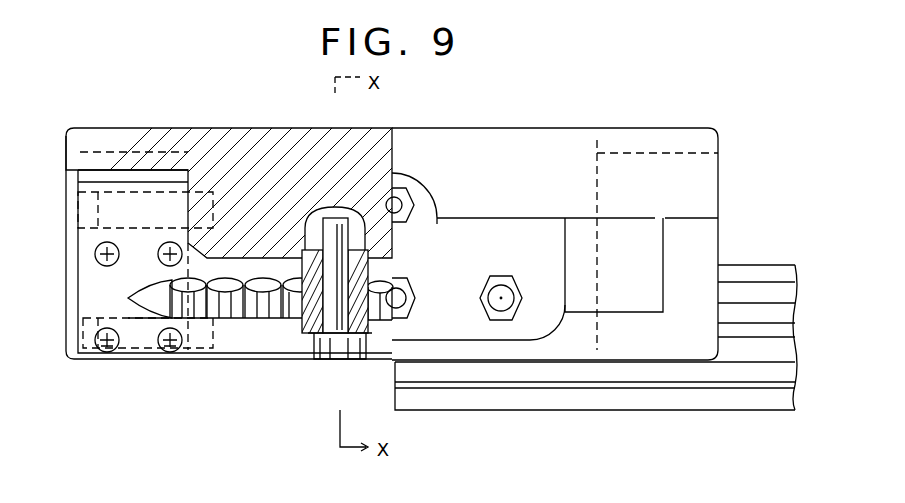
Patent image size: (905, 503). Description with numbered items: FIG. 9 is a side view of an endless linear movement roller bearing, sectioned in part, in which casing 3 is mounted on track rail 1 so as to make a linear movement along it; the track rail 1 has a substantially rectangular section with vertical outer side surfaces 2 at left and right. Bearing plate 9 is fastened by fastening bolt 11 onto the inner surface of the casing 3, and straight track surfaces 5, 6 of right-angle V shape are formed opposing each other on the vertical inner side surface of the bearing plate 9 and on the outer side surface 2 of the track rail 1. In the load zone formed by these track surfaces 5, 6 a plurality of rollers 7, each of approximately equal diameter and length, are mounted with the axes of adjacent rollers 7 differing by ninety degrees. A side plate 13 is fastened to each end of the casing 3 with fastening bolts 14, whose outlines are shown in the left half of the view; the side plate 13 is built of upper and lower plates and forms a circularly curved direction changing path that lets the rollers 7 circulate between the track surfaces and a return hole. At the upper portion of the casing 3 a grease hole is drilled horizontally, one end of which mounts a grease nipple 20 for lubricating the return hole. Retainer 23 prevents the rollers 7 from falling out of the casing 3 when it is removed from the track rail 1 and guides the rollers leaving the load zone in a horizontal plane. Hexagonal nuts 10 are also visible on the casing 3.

The track rail 1 is at (727, 403).
The vertical outer side surface 2 is at (747, 280).
The casing 3 is at (545, 136).
The straight track surface 5 is at (770, 292).
The straight track surface 6 is at (300, 318).
The roller 7 is at (262, 308).
The bearing plate 9 is at (310, 330).
The hexagon nuts 10 is at (400, 312).
The fastening bolt 11 is at (340, 340).
The side plate 13 is at (132, 183).
The fastening bolt 14 is at (162, 210).
The grease nipple 20 is at (401, 190).
The retainer 23 is at (222, 353).